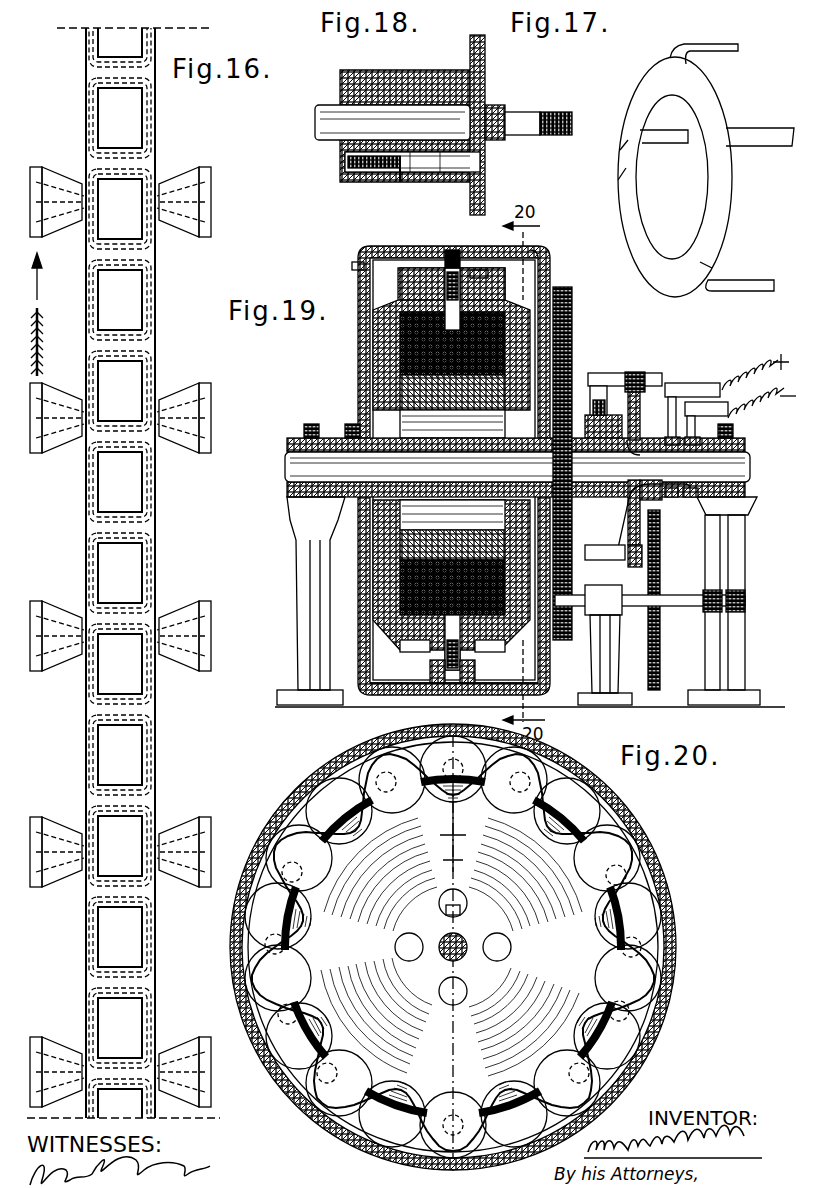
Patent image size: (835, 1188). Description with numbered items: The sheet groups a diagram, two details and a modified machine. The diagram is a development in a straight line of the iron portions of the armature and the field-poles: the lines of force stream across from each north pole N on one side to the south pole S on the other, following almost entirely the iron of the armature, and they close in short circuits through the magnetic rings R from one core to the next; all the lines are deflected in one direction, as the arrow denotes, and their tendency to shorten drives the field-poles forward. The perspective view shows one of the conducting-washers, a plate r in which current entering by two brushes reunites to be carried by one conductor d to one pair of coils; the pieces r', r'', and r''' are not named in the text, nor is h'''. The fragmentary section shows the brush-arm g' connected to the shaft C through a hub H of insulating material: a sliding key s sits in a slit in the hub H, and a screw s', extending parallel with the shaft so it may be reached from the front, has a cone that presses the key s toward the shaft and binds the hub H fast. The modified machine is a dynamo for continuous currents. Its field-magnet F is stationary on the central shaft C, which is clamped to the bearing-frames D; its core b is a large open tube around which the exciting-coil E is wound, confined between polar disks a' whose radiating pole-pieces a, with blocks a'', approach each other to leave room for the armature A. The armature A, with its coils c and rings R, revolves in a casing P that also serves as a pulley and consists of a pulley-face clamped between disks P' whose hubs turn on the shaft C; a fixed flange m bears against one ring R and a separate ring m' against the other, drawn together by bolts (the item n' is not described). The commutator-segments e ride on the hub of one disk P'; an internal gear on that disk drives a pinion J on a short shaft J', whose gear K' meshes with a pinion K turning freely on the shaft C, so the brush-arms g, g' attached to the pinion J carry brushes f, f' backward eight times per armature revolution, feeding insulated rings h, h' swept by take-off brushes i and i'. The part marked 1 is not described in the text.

In FIG. 16, the south pole S is at (45, 585).
In FIG. 16, the north pole N is at (199, 585).
In FIG. 18, the hub H is at (440, 80).
In FIG. 18, the brush-arm g' is at (488, 125).
In FIG. 19, the brush-arm g' is at (619, 516).
In FIG. 18, the shaft C is at (330, 108).
In FIG. 19, the shaft C is at (517, 460).
In FIG. 20, the shaft C is at (460, 940).
In FIG. 18, the threaded shaft end h''' is at (552, 123).
In FIG. 18, the screw s' is at (429, 164).
In FIG. 18, the sliding key s is at (405, 180).
In FIG. 17, the plate r is at (675, 177).
In FIG. 17, the ring arm r' is at (750, 199).
In FIG. 17, the upper ring arm r'' is at (708, 56).
In FIG. 17, the inner ring tab r''' is at (664, 150).
In FIG. 19, the casing P is at (444, 458).
In FIG. 20, the casing P is at (453, 947).
In FIG. 19, the disk P' is at (474, 470).
In FIG. 19, the conductor d is at (546, 254).
In FIG. 19, the terminal n' is at (352, 264).
In FIG. 19, the armature A is at (478, 252).
In FIG. 20, the armature A is at (668, 934).
In FIG. 19, the pole-piece a is at (451, 585).
In FIG. 20, the pole-piece a is at (456, 937).
In FIG. 19, the polar disk a' is at (442, 343).
In FIG. 20, the polar disk a' is at (451, 947).
In FIG. 19, the block a'' is at (467, 479).
In FIG. 19, the exciting-coil E is at (455, 378).
In FIG. 19, the commutator-segment e is at (590, 416).
In FIG. 19, the coil c is at (453, 250).
In FIG. 20, the coil c is at (453, 947).
In FIG. 19, the ring m' is at (493, 270).
In FIG. 19, the field-magnet F is at (452, 425).
In FIG. 20, the field-magnet F is at (453, 937).
In FIG. 19, the core b is at (432, 534).
In FIG. 19, the magnetic ring R is at (430, 664).
In FIG. 20, the magnetic ring R is at (650, 892).
In FIG. 19, the flange m is at (454, 695).
In FIG. 19, the bearing-frame D is at (300, 530).
In FIG. 19, the pinion J is at (571, 463).
In FIG. 19, the brush f is at (625, 394).
In FIG. 19, the brush-arm g is at (642, 411).
In FIG. 19, the take-off brush i is at (687, 414).
In FIG. 19, the take-off brush i' is at (706, 423).
In FIG. 19, the pinion K is at (658, 514).
In FIG. 19, the insulated ring h is at (671, 502).
In FIG. 19, the insulated ring h' is at (694, 502).
In FIG. 19, the negative brush f' is at (613, 547).
In FIG. 19, the gear K' is at (668, 600).
In FIG. 19, the short shaft J' is at (650, 601).
In FIG. 19, the small pedestal 1 is at (568, 644).